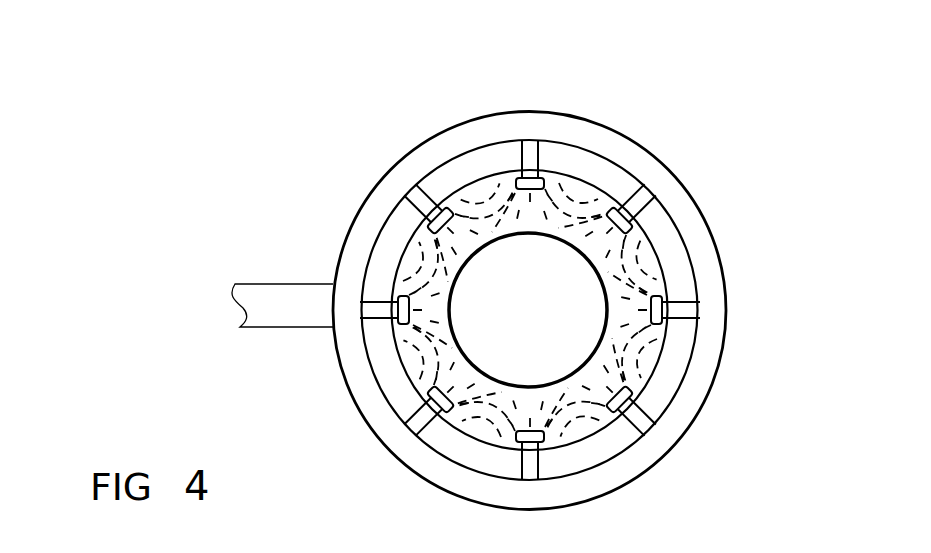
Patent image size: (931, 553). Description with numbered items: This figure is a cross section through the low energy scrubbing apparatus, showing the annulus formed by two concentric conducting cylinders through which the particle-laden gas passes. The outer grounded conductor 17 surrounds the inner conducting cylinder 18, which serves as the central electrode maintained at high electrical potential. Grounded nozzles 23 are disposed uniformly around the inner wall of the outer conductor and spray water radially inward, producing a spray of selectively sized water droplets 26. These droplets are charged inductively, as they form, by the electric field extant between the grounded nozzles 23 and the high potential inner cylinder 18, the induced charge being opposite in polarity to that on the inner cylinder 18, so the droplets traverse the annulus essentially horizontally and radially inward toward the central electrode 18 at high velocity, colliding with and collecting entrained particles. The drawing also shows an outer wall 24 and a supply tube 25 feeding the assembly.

The outer grounded conductor 17 is at (658, 253).
The inner conducting cylinder 18 is at (478, 284).
The grounded nozzles 23 is at (452, 193).
The outer housing ring 24 is at (637, 140).
The supply tube 25 is at (256, 332).
The spray of water droplets 26 is at (493, 219).